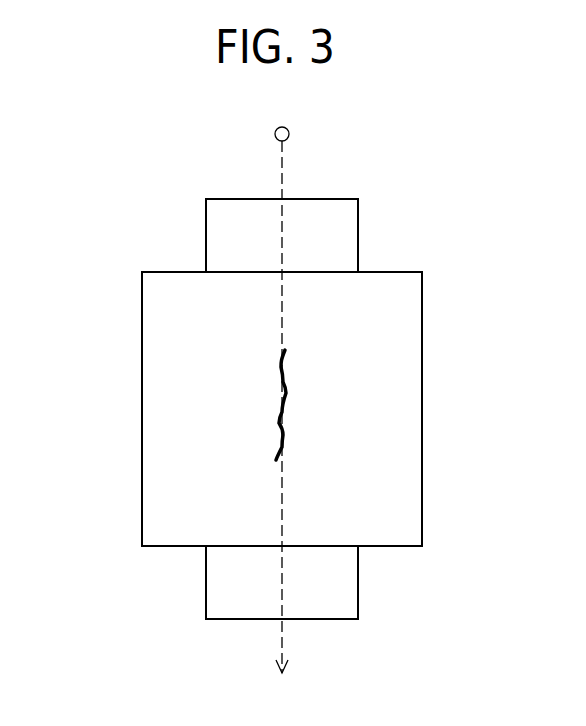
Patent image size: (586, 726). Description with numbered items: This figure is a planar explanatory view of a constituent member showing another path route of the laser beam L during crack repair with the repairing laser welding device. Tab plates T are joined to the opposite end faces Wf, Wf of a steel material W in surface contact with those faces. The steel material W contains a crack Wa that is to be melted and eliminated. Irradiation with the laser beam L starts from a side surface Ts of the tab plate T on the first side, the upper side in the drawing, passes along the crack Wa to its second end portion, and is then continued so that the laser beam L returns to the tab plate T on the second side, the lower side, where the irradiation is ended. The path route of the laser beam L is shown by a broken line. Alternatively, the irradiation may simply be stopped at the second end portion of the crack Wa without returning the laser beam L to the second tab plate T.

The steel material W is at (165, 337).
The crack Wa is at (275, 422).
The end face Wf is at (167, 271).
The tab plate T is at (222, 222).
The side surface Ts is at (334, 198).
The laser beam L is at (275, 133).